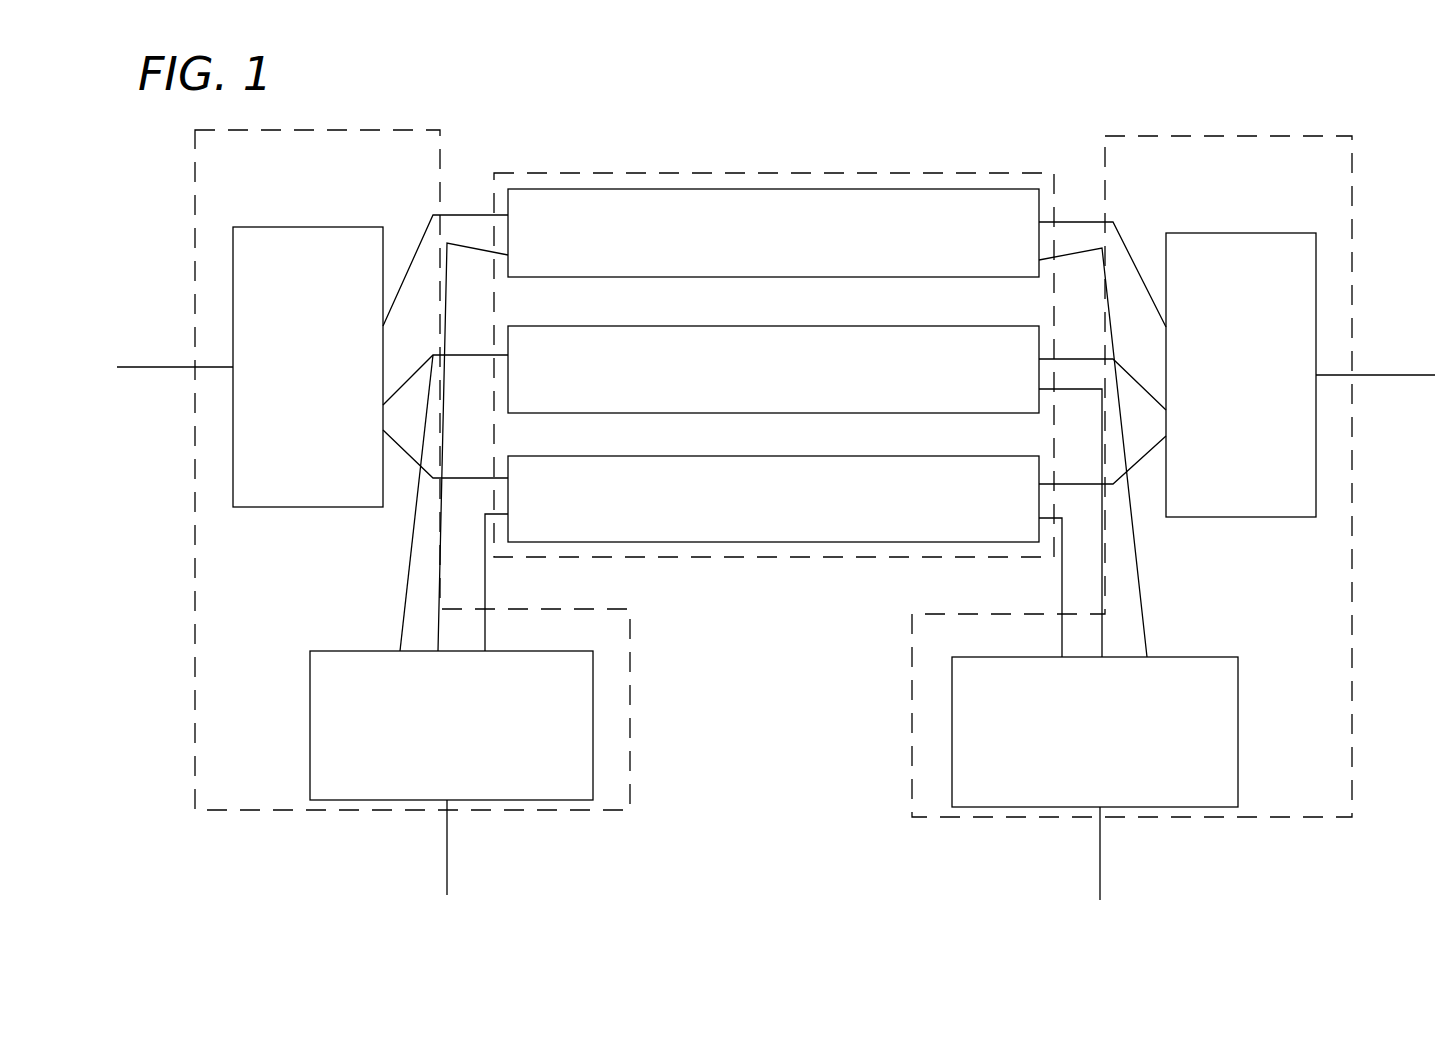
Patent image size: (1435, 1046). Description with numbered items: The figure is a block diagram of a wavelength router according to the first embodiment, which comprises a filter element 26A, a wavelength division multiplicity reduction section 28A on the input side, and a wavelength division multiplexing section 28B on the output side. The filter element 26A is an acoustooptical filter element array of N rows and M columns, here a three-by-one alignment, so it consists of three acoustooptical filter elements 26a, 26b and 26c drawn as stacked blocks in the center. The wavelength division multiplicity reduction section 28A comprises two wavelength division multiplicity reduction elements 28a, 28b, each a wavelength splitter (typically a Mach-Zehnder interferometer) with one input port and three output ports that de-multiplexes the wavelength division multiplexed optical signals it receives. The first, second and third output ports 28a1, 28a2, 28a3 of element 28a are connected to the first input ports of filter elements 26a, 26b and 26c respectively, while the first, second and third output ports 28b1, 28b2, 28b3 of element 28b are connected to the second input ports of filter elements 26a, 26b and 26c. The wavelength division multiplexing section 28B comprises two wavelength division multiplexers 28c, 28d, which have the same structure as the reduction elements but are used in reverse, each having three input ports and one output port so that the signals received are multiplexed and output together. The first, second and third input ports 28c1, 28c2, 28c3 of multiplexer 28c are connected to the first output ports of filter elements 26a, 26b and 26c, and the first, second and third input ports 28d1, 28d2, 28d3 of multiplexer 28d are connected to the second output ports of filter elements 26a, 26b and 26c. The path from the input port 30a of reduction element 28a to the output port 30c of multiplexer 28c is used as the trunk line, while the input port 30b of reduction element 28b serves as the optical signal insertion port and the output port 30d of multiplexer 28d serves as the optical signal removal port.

The filter element 26A is at (847, 173).
The acoustooptical filter element 26a is at (718, 189).
The acoustooptical filter element 26b is at (763, 326).
The acoustooptical filter element 26c is at (735, 542).
The wavelength division multiplicity reduction section 28A is at (327, 130).
The wavelength division multiplexing section 28B is at (1218, 136).
The wavelength division multiplicity reduction element 28a is at (300, 227).
The first output port 28a1 is at (408, 270).
The second output port 28a2 is at (480, 355).
The third output port 28a3 is at (413, 462).
The wavelength division multiplicity reduction element 28b is at (310, 722).
The first output port 28b1 is at (400, 617).
The second output port 28b2 is at (442, 585).
The third output port 28b3 is at (485, 625).
The wavelength division multiplexer 28c is at (1240, 233).
The first input port 28c1 is at (1067, 222).
The second input port 28c2 is at (1137, 380).
The third input port 28c3 is at (1152, 445).
The wavelength division multiplexer 28d is at (1238, 730).
The first input port 28d1 is at (1147, 635).
The second input port 28d2 is at (1102, 593).
The third input port 28d3 is at (1062, 637).
The input port 30a is at (160, 367).
The input port 30b is at (447, 855).
The output port 30c is at (1385, 375).
The output port 30d is at (1107, 858).